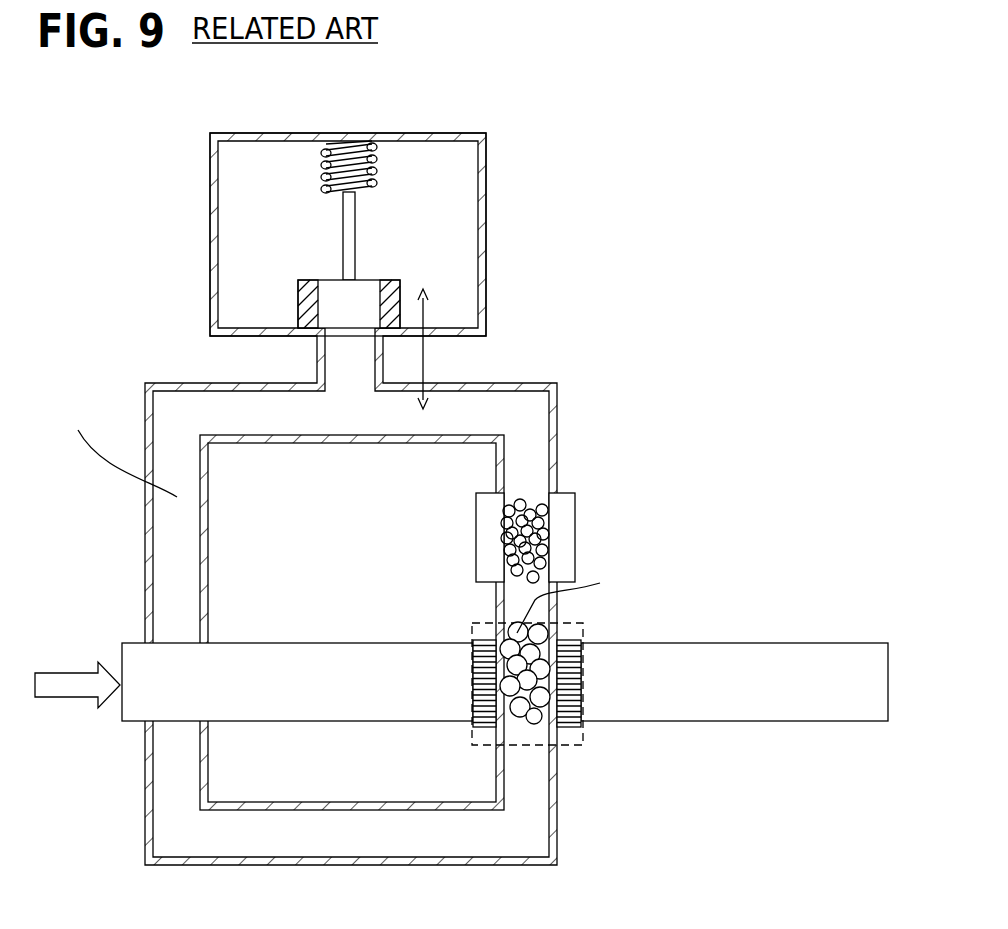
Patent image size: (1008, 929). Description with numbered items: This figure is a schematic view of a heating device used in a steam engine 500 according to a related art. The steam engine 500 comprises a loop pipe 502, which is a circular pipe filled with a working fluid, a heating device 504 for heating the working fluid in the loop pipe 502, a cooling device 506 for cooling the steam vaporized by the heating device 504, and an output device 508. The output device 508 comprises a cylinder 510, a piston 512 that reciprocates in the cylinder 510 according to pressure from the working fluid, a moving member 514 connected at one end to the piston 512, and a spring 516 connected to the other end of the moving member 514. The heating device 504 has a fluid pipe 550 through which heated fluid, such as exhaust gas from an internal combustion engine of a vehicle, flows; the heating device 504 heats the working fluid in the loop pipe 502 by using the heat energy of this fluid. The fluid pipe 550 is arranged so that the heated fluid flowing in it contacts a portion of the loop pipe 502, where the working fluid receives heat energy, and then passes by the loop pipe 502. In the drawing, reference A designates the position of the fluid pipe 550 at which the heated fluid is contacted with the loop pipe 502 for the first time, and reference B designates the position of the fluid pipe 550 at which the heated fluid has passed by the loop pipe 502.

The steam engine 500 is at (616, 147).
The loop pipe 502 is at (508, 383).
The heating device 504 is at (572, 623).
The cooling device 506 is at (562, 525).
The output device 508 is at (488, 127).
The cylinder 510 is at (300, 298).
The piston 512 is at (333, 285).
The moving member 514 is at (343, 205).
The spring 516 is at (335, 159).
The fluid pipe 550 is at (296, 640).
The position A is at (471, 680).
The position B is at (583, 692).